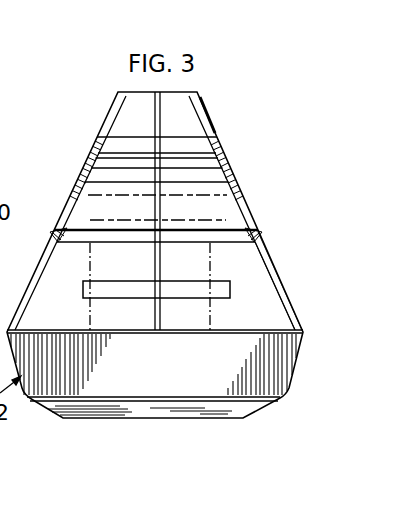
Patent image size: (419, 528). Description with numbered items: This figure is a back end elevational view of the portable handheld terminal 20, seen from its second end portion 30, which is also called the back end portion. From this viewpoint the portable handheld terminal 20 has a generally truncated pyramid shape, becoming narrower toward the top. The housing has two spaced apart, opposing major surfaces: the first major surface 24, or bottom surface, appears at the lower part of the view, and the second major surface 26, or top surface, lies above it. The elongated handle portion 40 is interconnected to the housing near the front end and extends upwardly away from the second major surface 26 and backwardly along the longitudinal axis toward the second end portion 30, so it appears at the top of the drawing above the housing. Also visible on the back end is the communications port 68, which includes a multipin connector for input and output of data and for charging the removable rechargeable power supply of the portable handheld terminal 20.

The portable handheld terminal 20 is at (228, 112).
The handle portion 40 is at (105, 120).
The second major surface 26 is at (225, 232).
The second end portion 30 is at (283, 286).
The communications port 68 is at (220, 283).
The first major surface 24 is at (167, 397).